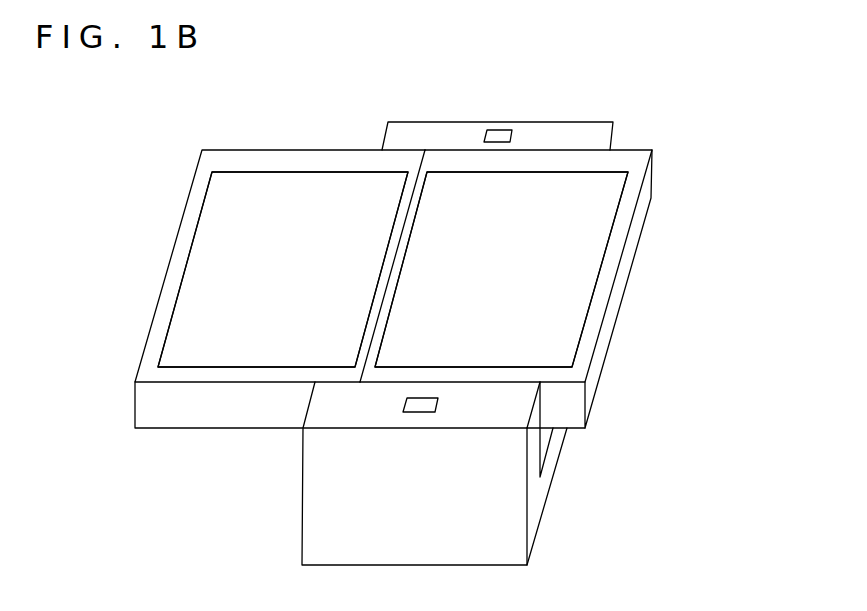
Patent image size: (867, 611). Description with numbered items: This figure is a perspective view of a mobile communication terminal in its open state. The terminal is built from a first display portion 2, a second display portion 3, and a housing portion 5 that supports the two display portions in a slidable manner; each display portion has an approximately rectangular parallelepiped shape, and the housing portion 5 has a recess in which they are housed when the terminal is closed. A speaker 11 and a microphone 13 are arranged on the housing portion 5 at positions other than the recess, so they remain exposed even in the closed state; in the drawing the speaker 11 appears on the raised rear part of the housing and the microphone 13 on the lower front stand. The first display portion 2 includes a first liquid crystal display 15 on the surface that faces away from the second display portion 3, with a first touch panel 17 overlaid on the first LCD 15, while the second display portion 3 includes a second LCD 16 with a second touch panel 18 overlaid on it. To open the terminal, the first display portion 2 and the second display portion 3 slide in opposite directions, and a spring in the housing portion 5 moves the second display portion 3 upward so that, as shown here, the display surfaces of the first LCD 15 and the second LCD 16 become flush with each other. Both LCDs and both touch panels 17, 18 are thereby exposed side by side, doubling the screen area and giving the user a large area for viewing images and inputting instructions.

The first display portion 2 is at (173, 252).
The second display portion 3 is at (610, 318).
The housing portion 5 is at (573, 135).
The speaker 11 is at (497, 131).
The microphone 13 is at (415, 412).
The first liquid crystal display 15 is at (225, 207).
The second liquid crystal display 16 is at (587, 212).
The first touch panel 17 is at (188, 328).
The second touch panel 18 is at (577, 264).